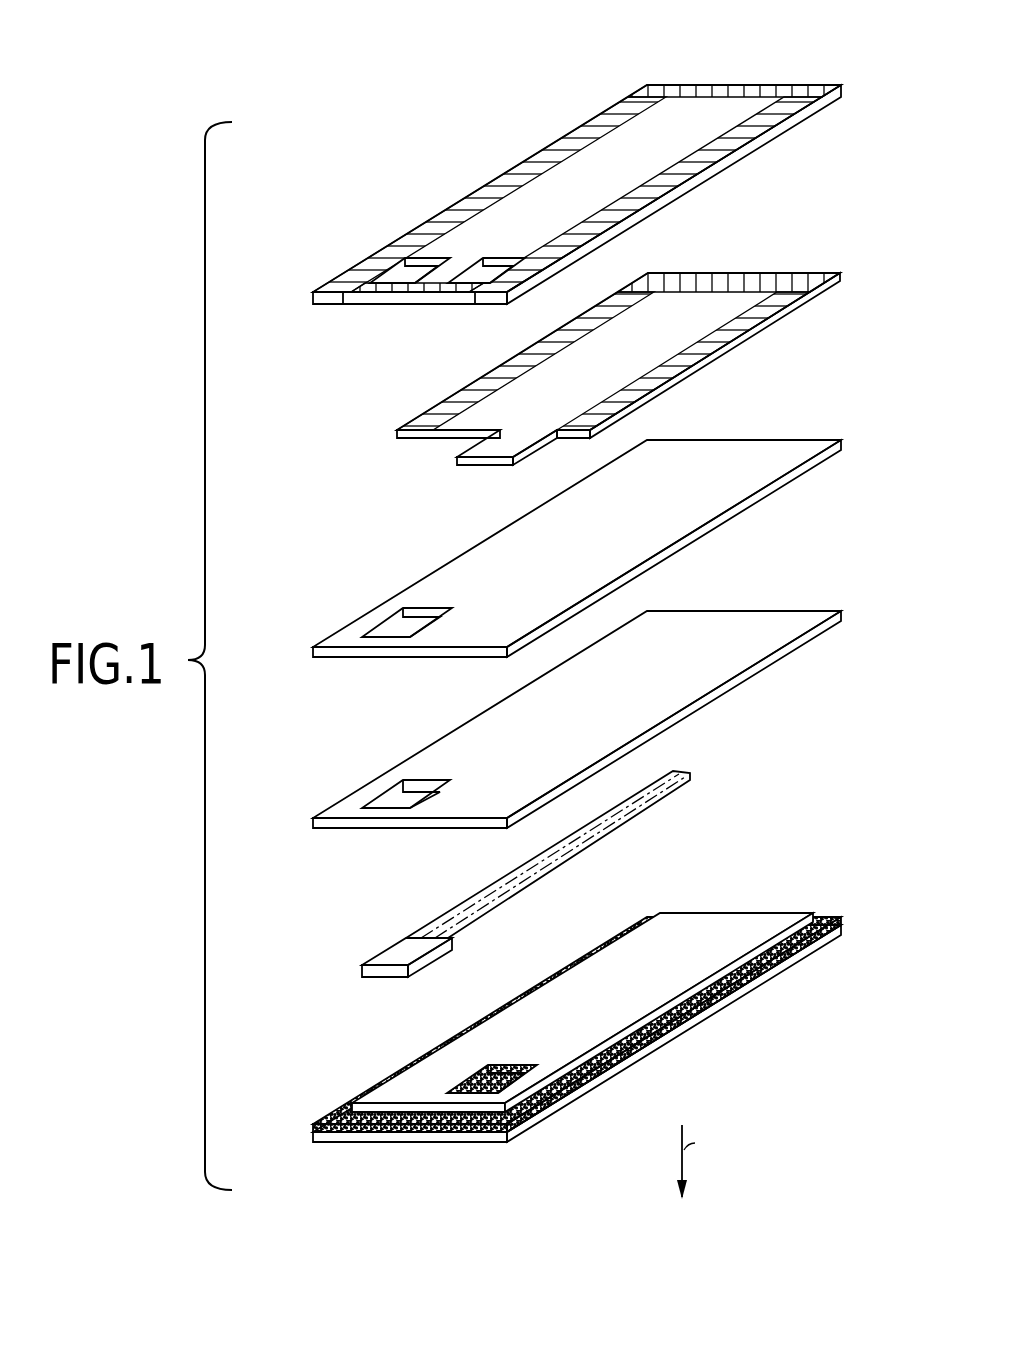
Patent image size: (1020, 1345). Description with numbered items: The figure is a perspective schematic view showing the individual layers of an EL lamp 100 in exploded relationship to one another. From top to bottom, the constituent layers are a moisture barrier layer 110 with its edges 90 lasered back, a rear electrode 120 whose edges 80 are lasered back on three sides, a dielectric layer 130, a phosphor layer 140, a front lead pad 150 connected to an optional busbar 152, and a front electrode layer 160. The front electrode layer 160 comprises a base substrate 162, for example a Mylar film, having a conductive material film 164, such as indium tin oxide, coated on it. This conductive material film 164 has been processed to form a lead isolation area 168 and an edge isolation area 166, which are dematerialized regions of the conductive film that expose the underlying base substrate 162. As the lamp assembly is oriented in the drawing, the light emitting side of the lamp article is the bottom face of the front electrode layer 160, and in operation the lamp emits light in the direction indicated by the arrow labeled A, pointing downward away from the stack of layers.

The EL lamp 100 is at (393, 127).
The edges 90 is at (752, 92).
The moisture barrier layer 110 is at (590, 153).
The edges 80 is at (800, 275).
The rear electrode 120 is at (490, 404).
The dielectric layer 130 is at (750, 450).
The phosphor layer 140 is at (752, 622).
The front lead pad 150 is at (398, 950).
The busbar 152 is at (690, 778).
The front electrode layer 160 is at (343, 1067).
The base substrate 162 is at (455, 1142).
The conductive material film 164 is at (712, 920).
The edge isolation area 166 is at (512, 1122).
The lead isolation area 168 is at (488, 1080).